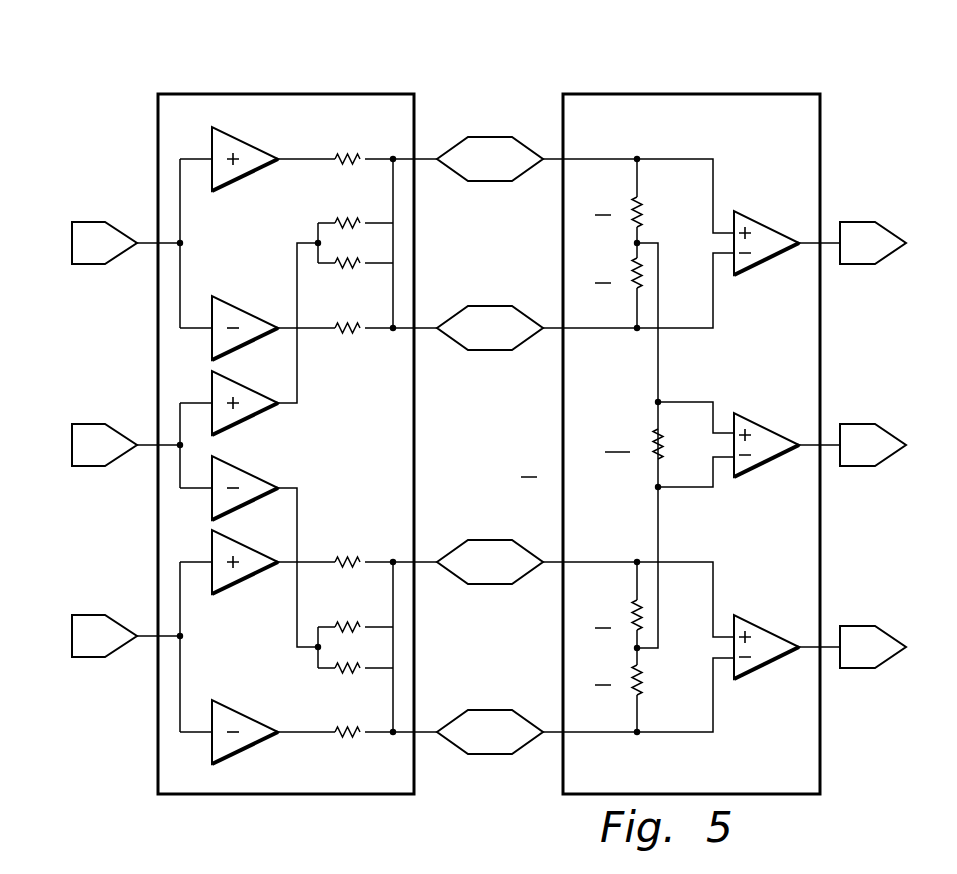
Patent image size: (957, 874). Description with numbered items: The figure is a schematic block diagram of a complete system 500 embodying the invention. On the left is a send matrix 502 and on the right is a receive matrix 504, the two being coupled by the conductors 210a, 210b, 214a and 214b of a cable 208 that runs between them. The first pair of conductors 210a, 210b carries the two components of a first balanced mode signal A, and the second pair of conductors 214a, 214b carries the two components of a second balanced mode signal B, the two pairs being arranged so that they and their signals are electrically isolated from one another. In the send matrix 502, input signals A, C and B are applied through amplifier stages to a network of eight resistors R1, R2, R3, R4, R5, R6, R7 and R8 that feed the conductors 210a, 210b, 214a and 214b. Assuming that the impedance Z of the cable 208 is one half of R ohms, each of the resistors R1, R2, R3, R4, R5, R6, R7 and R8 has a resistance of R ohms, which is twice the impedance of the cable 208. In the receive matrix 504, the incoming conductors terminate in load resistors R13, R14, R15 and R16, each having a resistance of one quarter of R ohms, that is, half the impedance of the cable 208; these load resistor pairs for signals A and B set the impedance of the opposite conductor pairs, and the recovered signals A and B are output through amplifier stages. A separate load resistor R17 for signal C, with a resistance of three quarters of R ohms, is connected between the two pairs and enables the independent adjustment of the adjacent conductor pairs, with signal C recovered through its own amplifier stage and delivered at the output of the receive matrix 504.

The complete system 500 is at (318, 57).
The send matrix 502 is at (157, 168).
The receive matrix 504 is at (821, 168).
The cable 208 is at (447, 793).
The first conductor of first pair 210a is at (488, 182).
The second conductor of first pair 210b is at (488, 352).
The first conductor of second pair 214a is at (489, 585).
The second conductor of second pair 214b is at (489, 756).
The resistor R1 is at (345, 152).
The resistor R2 is at (345, 216).
The resistor R3 is at (341, 269).
The resistor R4 is at (347, 336).
The resistor R5 is at (345, 556).
The resistor R6 is at (345, 621).
The resistor R7 is at (341, 675).
The resistor R8 is at (347, 740).
The resistor R13 is at (644, 214).
The resistor R14 is at (632, 265).
The resistor R15 is at (632, 608).
The resistor R16 is at (645, 680).
The load resistor R17 is at (654, 433).